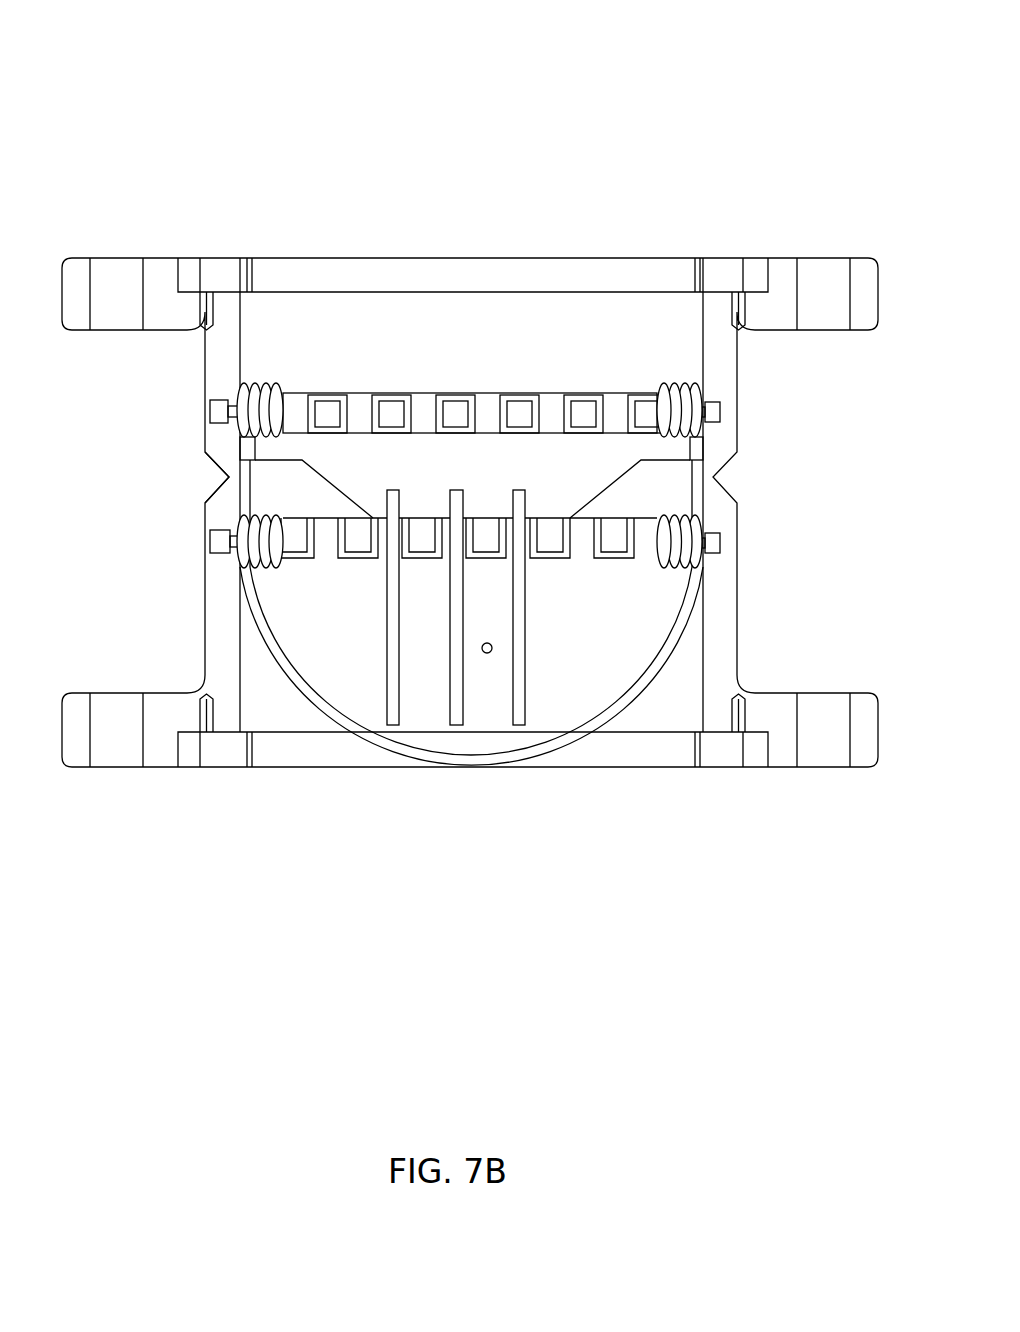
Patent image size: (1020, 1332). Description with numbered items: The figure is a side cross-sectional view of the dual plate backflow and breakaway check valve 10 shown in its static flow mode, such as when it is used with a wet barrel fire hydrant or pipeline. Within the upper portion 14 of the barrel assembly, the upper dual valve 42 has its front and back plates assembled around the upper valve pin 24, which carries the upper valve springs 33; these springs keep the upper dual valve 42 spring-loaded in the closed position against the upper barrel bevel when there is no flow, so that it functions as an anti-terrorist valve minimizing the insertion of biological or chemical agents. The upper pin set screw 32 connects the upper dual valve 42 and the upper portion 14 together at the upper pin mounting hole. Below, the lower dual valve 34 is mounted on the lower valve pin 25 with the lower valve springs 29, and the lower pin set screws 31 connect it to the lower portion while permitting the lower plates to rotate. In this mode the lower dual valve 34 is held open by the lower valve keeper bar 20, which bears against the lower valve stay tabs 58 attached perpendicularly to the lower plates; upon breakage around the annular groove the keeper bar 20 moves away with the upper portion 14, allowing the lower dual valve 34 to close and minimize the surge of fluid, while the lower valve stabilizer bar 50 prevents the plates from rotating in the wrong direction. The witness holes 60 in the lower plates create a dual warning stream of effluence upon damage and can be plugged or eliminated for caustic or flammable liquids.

The dual plate backflow and breakaway check valve 10 is at (565, 125).
The upper portion 14 is at (205, 360).
The lower valve keeper bar 20 is at (490, 462).
The upper valve pin 24 is at (720, 410).
The lower valve pin 25 is at (420, 537).
The lower valve springs 29 is at (268, 503).
The lower pin set screws 31 is at (217, 537).
The upper pin set screw 32 is at (205, 407).
The upper valve springs 33 is at (263, 382).
The lower dual valve 34 is at (368, 737).
The upper dual valve 42 is at (570, 390).
The lower valve stabilizer bar 50 is at (612, 767).
The lower valve stay tabs 58 is at (520, 492).
The witness holes 60 is at (487, 653).